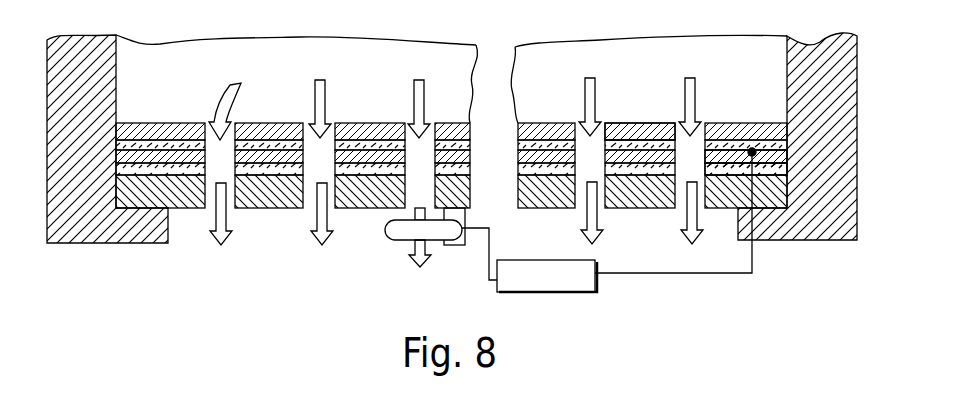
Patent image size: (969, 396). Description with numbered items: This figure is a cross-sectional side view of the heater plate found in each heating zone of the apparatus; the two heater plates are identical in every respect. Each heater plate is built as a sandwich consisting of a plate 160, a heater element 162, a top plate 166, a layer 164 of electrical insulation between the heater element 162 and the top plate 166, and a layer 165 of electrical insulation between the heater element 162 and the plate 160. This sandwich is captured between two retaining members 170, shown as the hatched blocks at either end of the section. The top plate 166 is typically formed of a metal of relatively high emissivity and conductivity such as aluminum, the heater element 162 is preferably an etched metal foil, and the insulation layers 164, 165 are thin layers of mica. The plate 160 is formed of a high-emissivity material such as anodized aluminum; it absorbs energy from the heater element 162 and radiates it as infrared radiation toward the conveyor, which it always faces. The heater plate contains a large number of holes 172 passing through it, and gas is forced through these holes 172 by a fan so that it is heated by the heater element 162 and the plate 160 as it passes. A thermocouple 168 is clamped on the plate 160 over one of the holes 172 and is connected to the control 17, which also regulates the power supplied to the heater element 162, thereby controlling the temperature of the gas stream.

The control 17 is at (595, 288).
The plate 160 is at (617, 208).
The heater element 162 is at (795, 153).
The layer of electrical insulation 164 is at (793, 140).
The layer of electrical insulation 165 is at (795, 165).
The top plate 166 is at (640, 123).
The thermocouple 168 is at (403, 242).
The retaining members 170 is at (48, 238).
The holes 172 is at (235, 211).